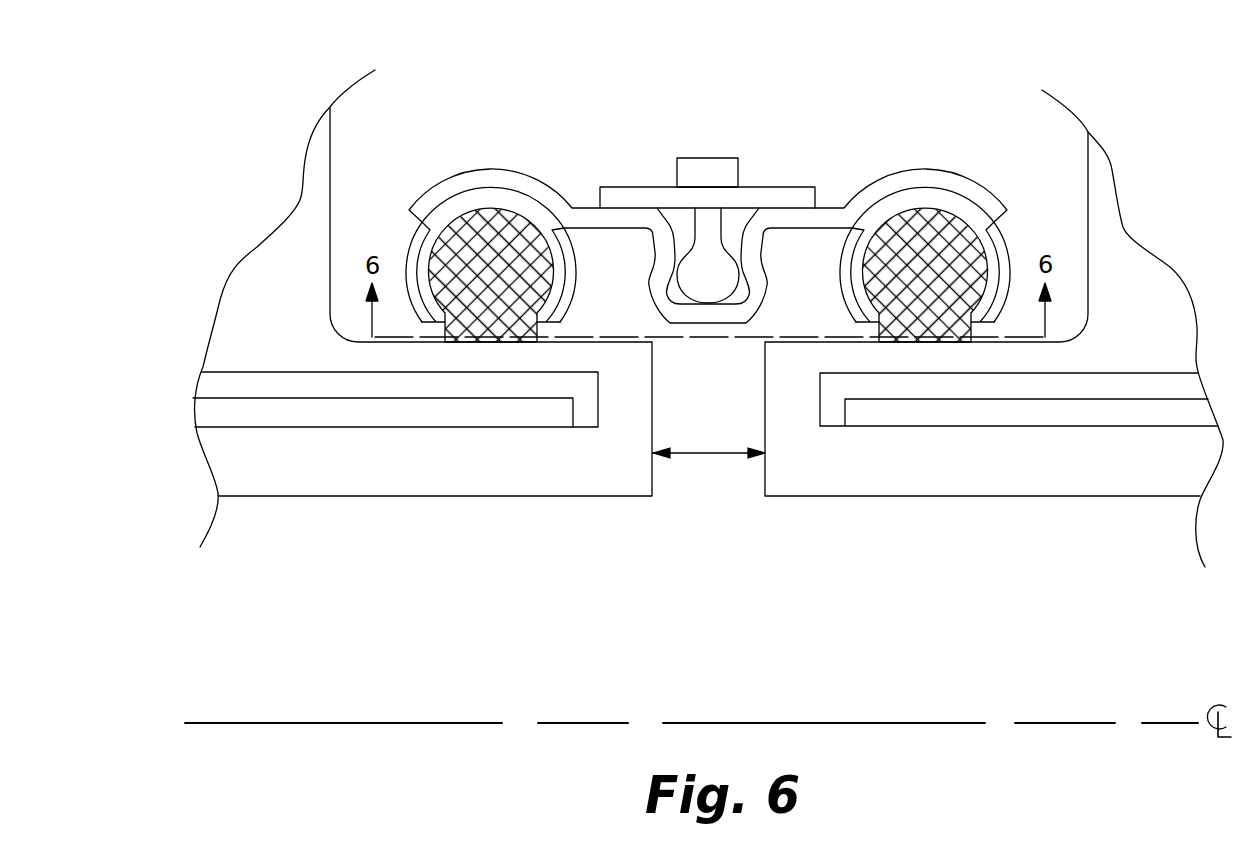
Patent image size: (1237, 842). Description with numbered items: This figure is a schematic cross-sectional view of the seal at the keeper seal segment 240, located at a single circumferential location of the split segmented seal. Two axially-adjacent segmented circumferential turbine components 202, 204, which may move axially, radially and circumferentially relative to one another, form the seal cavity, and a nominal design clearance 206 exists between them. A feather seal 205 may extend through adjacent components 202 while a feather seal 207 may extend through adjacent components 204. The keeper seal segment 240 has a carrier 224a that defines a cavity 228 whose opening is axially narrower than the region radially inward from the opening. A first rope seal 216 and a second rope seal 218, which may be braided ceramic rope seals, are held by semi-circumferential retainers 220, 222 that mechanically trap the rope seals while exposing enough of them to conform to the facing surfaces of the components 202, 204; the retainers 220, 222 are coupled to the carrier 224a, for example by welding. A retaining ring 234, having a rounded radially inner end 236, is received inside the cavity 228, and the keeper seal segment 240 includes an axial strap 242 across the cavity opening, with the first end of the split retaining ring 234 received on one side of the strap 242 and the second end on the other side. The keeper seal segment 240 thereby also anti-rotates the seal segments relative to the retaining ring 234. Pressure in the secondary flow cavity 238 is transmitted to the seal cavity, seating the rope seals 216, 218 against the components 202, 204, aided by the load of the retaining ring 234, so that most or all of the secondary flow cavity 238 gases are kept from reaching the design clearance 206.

The segmented circumferential turbine component 202 is at (493, 496).
The segmented circumferential turbine component 204 is at (1025, 497).
The feather seal 205 is at (300, 415).
The nominal design clearance 206 is at (712, 453).
The feather seal 207 is at (883, 415).
The first rope seal 216 is at (508, 263).
The second rope seal 218 is at (908, 253).
The retainer 220 is at (562, 318).
The retainer 222 is at (846, 294).
The carrier 224a is at (580, 207).
The cavity 228 is at (748, 283).
The retaining ring 234 is at (717, 158).
The rounded radially inner end 236 is at (683, 290).
The secondary flow cavity 238 is at (512, 61).
The keeper seal segment 240 is at (745, 120).
The axial strap 242 is at (793, 187).